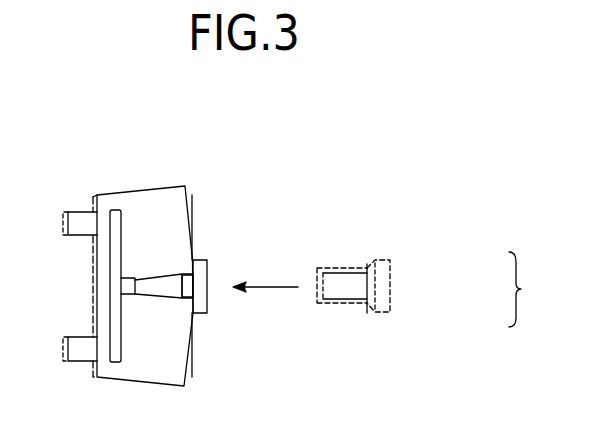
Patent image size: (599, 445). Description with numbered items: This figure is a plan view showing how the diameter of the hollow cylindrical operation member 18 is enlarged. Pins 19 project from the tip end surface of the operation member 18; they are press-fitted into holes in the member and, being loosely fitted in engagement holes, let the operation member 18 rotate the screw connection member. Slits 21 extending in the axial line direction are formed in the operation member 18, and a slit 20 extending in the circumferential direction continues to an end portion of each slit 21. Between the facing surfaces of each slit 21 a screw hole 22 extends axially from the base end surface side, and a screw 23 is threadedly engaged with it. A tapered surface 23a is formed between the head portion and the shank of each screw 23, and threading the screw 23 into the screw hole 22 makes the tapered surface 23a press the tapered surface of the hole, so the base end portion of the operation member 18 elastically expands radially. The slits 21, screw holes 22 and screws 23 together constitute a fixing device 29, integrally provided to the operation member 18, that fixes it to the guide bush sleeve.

The operation member 18 is at (121, 179).
The pin 19 is at (80, 220).
The slit 20 is at (116, 350).
The slit 21 is at (163, 283).
The screw hole 22 is at (491, 292).
The screw 23 is at (200, 295).
The tapered surface 23a is at (187, 285).
The fixing device 29 is at (529, 289).